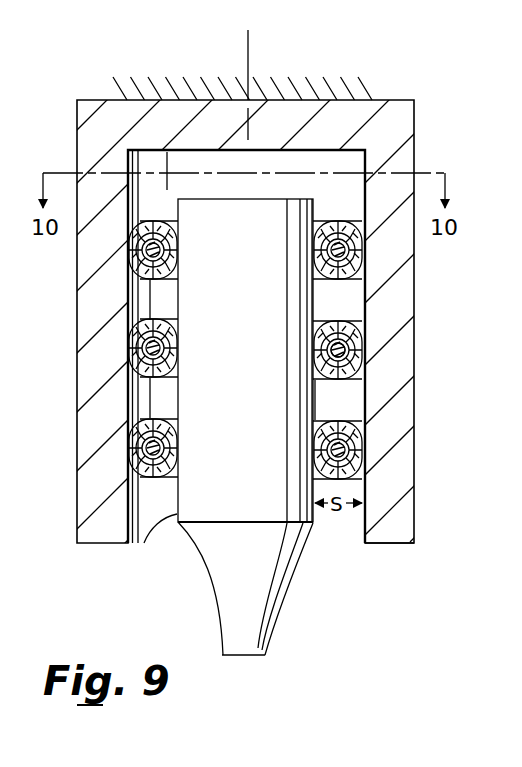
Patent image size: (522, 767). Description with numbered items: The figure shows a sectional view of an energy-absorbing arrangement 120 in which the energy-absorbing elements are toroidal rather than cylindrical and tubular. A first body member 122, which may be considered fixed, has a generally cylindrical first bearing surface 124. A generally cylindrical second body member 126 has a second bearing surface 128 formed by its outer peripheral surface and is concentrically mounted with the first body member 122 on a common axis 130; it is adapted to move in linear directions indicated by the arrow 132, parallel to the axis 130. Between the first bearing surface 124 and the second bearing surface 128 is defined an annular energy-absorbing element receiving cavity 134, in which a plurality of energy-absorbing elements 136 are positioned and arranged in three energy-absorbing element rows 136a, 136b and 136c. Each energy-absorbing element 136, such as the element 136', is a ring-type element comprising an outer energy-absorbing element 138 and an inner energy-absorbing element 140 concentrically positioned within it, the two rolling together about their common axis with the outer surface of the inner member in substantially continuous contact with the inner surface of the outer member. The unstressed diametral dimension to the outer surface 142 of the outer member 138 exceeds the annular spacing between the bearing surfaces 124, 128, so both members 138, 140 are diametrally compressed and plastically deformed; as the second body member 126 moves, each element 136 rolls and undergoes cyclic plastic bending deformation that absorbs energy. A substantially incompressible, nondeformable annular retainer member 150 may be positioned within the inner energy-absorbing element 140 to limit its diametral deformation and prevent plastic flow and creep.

The energy-absorbing arrangement 120 is at (460, 32).
The first body member 122 is at (482, 104).
The first bearing surface 124 is at (366, 528).
The second body member 126 is at (306, 530).
The second bearing surface 128 is at (146, 541).
The axis 130 is at (249, 50).
The arrow 132 is at (243, 672).
The annular energy-absorbing element receiving cavity 134 is at (354, 409).
The energy-absorbing element 136 is at (401, 256).
The energy-absorbing element 136' is at (396, 433).
The energy-absorbing element row 136a is at (127, 466).
The energy-absorbing element row 136b is at (127, 377).
The energy-absorbing element row 136c is at (127, 276).
The outer energy-absorbing element 138 is at (362, 486).
The inner energy-absorbing element 140 is at (362, 360).
The outer surface 142 is at (321, 280).
The annular retainer member 150 is at (342, 368).